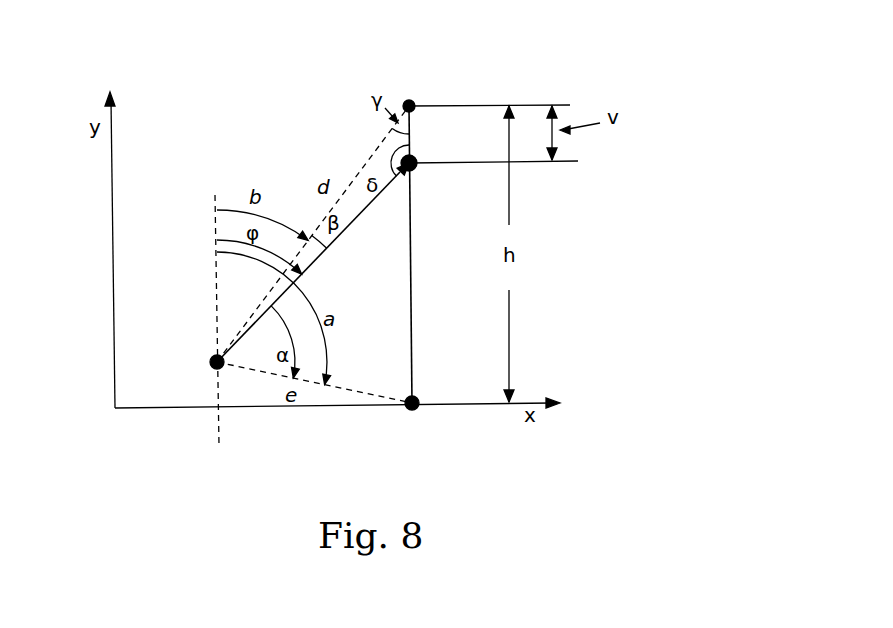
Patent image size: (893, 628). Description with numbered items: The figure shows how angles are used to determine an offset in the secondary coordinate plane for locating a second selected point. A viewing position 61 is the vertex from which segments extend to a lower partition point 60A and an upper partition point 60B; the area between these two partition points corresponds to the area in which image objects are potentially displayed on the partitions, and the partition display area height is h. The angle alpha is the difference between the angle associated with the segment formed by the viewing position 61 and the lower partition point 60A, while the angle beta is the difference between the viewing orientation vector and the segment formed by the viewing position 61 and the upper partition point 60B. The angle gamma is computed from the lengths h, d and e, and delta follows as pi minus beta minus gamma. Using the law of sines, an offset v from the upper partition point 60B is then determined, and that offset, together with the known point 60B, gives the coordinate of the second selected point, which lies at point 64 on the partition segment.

The viewing position 61 is at (202, 362).
The upper partition point 60B is at (400, 88).
The intermediate point 64 is at (427, 182).
The lower partition point 60A is at (430, 422).